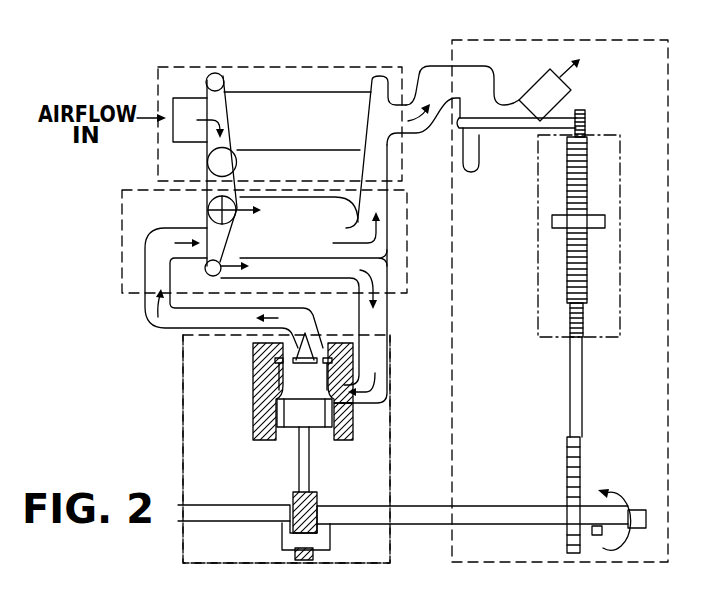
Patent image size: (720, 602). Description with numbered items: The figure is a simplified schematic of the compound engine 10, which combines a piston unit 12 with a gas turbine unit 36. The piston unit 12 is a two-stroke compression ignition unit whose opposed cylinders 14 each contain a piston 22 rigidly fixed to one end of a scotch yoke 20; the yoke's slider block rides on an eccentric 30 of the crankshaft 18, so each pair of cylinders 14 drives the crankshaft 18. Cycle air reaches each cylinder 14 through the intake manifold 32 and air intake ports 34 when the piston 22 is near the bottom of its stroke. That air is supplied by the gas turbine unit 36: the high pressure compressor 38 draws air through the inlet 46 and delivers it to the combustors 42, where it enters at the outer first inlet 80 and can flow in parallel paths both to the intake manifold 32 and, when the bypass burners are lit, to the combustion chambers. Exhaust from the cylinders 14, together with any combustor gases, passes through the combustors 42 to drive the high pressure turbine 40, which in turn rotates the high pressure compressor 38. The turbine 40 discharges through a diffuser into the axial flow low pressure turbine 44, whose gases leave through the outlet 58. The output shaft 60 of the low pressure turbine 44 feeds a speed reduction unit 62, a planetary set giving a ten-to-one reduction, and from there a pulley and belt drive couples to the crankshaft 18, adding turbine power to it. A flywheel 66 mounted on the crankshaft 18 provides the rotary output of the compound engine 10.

The compound engine 10 is at (100, 418).
The piston unit 12 is at (212, 435).
The cylinder 14 is at (314, 386).
The crankshaft 18 is at (533, 483).
The scotch yoke 20 is at (323, 490).
The piston 22 is at (300, 418).
The eccentric 30 is at (282, 545).
The intake manifold 32 is at (393, 325).
The air intake port 34 is at (270, 386).
The gas turbine unit 36 is at (229, 50).
The high pressure compressor 38 is at (237, 119).
The high pressure turbine 40 is at (392, 68).
The combustor 42 is at (113, 215).
The low pressure turbine 44 is at (498, 60).
The inlet 46 is at (173, 138).
The outlet 58 is at (573, 83).
The output shaft 60 is at (513, 138).
The speed reduction unit 62 is at (622, 227).
The flywheel 66 is at (582, 412).
The outer first inlet 80 is at (236, 266).